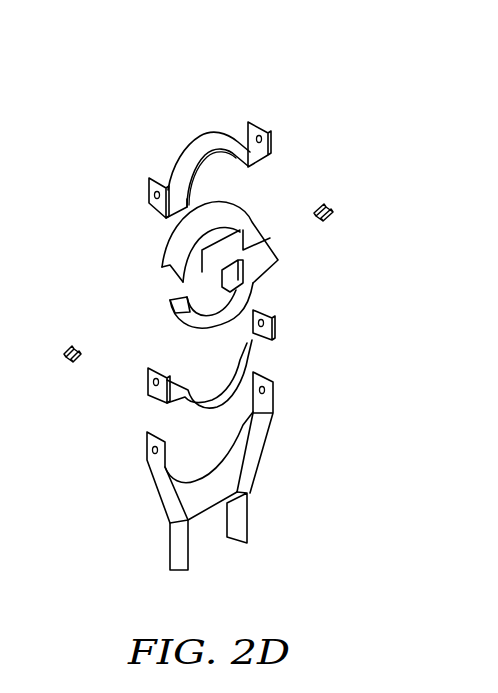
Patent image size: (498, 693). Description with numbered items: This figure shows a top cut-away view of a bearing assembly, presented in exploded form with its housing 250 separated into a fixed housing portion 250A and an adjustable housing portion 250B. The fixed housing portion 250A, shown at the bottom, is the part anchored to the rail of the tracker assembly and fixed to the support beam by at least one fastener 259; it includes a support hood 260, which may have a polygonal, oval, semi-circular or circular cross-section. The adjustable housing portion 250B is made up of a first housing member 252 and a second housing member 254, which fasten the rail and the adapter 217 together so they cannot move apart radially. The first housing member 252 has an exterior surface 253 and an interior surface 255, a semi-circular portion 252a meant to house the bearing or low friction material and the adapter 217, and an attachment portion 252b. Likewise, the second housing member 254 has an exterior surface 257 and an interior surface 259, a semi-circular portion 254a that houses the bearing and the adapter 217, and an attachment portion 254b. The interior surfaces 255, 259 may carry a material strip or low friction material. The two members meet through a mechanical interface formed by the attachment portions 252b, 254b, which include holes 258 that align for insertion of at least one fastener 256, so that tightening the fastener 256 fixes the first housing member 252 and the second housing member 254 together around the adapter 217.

The adapter 217 is at (279, 260).
The housing 250 is at (148, 210).
The fixed housing portion 250A is at (267, 447).
The adjustable housing portion 250B is at (148, 186).
The first housing member 252 is at (272, 131).
The semi-circular portion 252a is at (182, 150).
The attachment portion 252b is at (252, 120).
The exterior surface 253 is at (200, 137).
The second housing member 254 is at (274, 338).
The semi-circular portion 254a is at (217, 407).
The attachment portion 254b is at (275, 318).
The interior surface 255 is at (222, 163).
The fastener 256 is at (338, 203).
The exterior surface 257 is at (200, 408).
The holes 258 is at (148, 198).
The interior surface 259 is at (214, 392).
The support hood 260 is at (188, 505).